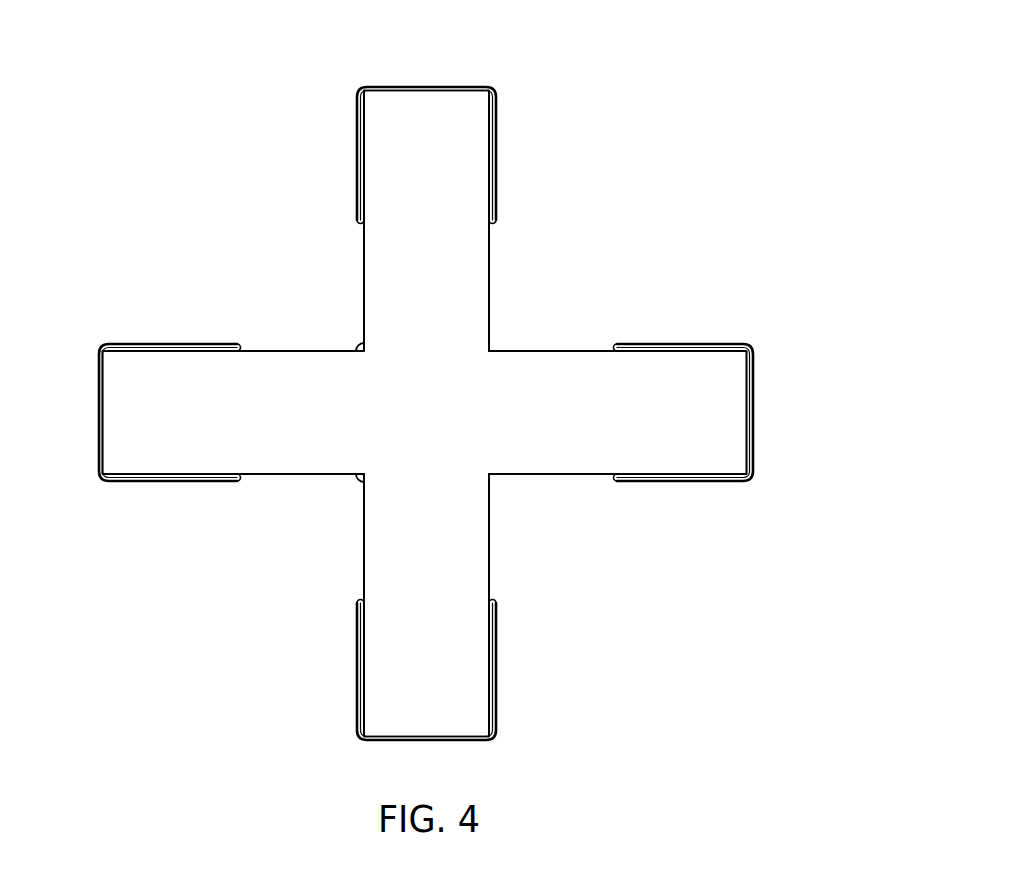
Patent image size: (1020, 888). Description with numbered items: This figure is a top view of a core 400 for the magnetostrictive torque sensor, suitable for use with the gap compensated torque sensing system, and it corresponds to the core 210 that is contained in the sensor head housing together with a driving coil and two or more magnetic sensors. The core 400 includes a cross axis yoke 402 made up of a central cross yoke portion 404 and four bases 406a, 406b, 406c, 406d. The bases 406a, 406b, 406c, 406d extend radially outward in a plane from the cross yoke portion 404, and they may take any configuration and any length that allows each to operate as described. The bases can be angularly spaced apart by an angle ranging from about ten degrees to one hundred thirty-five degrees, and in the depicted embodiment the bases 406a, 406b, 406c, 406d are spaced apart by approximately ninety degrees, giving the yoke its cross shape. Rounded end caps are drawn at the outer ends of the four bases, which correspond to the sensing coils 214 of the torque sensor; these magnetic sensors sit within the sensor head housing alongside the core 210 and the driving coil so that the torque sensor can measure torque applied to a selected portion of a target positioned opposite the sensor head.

The core 400 is at (591, 69).
The core 210 is at (341, 329).
The cross axis yoke 402 is at (412, 455).
The cross yoke portion 404 is at (443, 424).
The base 406a is at (366, 248).
The base 406b is at (268, 465).
The base 406c is at (475, 570).
The base 406d is at (570, 465).
The sensing coils 214 is at (356, 152).